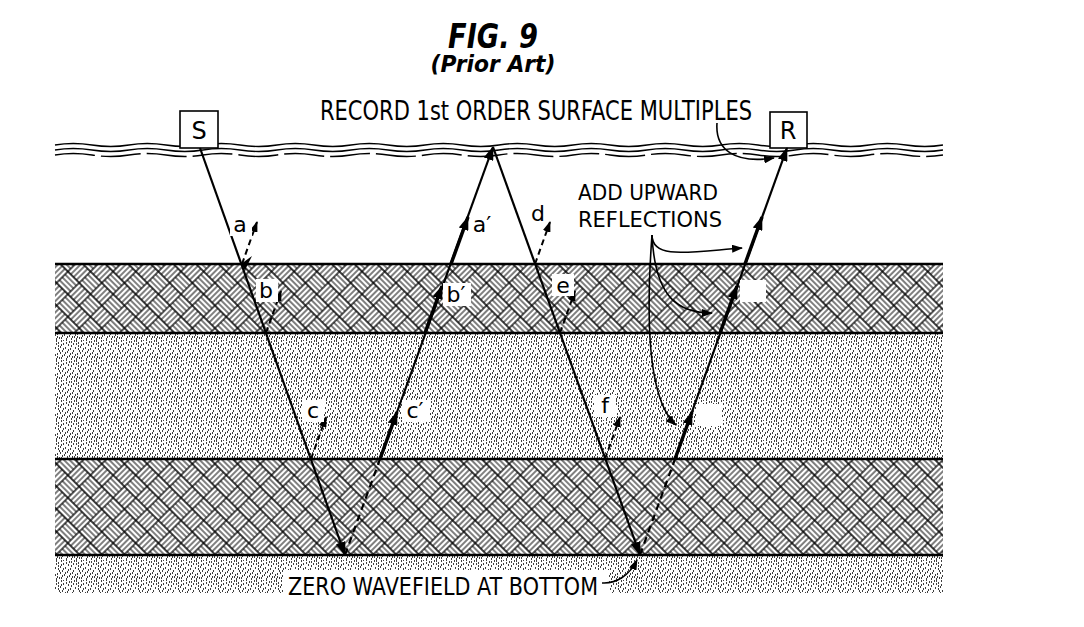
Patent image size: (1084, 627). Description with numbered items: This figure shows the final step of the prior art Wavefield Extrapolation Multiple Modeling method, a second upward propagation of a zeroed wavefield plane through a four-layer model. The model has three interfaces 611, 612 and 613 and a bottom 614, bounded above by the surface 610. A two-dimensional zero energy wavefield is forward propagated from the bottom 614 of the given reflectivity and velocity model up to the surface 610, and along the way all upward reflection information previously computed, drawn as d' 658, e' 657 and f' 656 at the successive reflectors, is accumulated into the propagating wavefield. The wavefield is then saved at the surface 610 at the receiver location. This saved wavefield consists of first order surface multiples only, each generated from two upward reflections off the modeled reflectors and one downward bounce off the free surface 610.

The surface 610 is at (853, 144).
The first interface 611 is at (853, 263).
The second interface 612 is at (853, 332).
The third interface 613 is at (853, 458).
The bottom 614 is at (853, 554).
The upward reflection information f' 656 is at (687, 443).
The upward reflection information e' 657 is at (727, 321).
The upward reflection information d' 658 is at (752, 251).